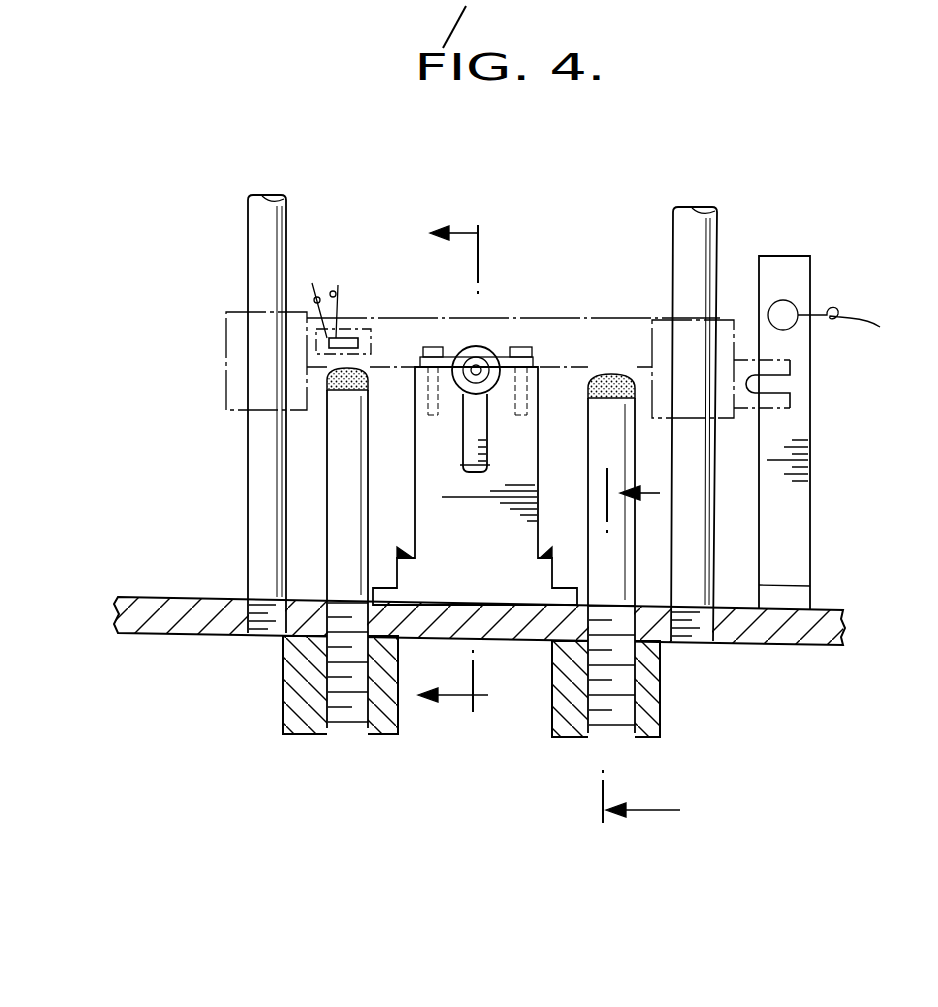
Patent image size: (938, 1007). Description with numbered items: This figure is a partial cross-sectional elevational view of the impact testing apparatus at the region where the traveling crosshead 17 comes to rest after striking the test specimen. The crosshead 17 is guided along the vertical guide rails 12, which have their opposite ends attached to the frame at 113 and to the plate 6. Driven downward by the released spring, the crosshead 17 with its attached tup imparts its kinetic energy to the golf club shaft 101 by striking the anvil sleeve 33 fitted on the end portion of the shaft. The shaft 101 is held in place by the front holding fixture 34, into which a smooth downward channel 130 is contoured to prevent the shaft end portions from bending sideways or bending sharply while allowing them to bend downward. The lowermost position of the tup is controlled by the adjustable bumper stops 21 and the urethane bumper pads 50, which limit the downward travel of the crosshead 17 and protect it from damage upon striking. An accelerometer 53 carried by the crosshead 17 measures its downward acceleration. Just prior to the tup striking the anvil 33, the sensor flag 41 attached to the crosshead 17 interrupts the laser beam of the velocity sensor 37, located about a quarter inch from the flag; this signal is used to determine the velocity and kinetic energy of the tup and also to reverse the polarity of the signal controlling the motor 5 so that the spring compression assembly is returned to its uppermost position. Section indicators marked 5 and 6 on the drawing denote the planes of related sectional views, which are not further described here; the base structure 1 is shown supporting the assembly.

The base plate 1 is at (150, 633).
The vertical guide rails 12 is at (258, 254).
The crosshead 17 is at (563, 318).
The adjustable bumper stops 21 is at (333, 445).
The anvil sleeve 33 is at (466, 350).
The front holding fixture 34 is at (482, 561).
The velocity sensor 37 is at (786, 302).
The sensor flag 41 is at (790, 397).
The bumper pads 50 is at (327, 378).
The accelerometer 53 is at (343, 338).
The golf club shaft 101 is at (479, 364).
The frame attachment 113 is at (237, 603).
The channel 130 is at (463, 440).
The motor 5 is at (641, 654).
The plate 6 is at (464, 470).